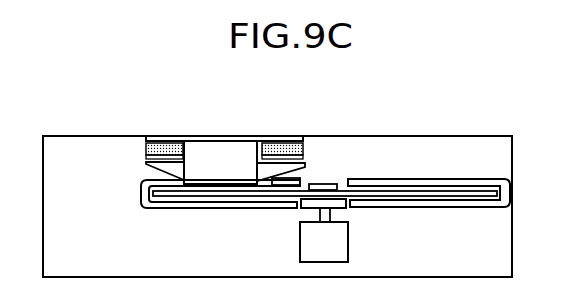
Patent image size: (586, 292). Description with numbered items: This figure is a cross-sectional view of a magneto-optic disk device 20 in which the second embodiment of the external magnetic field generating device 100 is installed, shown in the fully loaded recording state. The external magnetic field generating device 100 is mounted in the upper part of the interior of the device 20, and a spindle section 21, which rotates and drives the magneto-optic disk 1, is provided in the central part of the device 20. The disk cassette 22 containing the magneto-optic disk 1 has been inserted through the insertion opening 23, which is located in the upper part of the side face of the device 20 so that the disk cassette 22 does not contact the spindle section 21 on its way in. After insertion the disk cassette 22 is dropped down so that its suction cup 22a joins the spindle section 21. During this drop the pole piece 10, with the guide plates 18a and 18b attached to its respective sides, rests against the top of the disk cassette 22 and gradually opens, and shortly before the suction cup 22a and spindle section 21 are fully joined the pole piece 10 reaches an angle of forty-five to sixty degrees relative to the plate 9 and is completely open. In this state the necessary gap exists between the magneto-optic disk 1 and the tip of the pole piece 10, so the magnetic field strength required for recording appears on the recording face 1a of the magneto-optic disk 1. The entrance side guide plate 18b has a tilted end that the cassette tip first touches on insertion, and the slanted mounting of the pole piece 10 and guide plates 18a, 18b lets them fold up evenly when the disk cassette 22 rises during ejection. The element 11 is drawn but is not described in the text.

The external magnetic field generating device 100 is at (192, 137).
The plate 9 is at (180, 137).
The pole piece 10 is at (238, 148).
The electrode pads 11 is at (155, 137).
The guide plate 18a is at (146, 170).
The entrance side guide plate 18b is at (304, 164).
The suction cup 22a is at (333, 182).
The disk cassette 22 is at (481, 180).
The insertion opening 23 is at (515, 182).
The spindle section 21 is at (336, 209).
The magneto-optic disk 1 is at (477, 207).
The recording face 1a is at (223, 197).
The magneto-optic disk device 20 is at (519, 242).